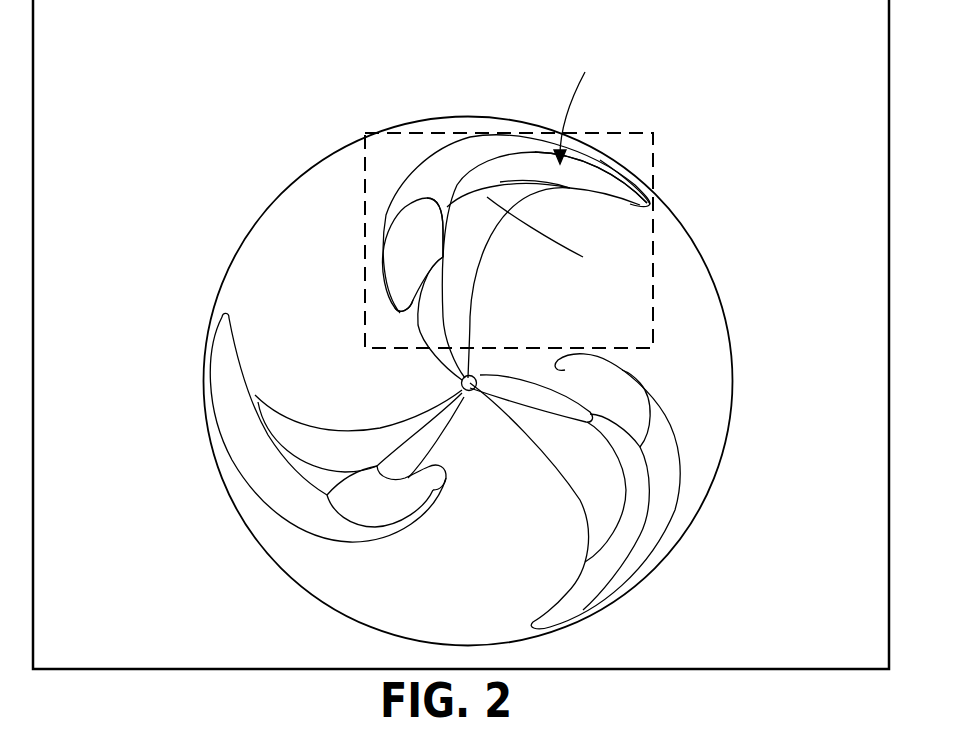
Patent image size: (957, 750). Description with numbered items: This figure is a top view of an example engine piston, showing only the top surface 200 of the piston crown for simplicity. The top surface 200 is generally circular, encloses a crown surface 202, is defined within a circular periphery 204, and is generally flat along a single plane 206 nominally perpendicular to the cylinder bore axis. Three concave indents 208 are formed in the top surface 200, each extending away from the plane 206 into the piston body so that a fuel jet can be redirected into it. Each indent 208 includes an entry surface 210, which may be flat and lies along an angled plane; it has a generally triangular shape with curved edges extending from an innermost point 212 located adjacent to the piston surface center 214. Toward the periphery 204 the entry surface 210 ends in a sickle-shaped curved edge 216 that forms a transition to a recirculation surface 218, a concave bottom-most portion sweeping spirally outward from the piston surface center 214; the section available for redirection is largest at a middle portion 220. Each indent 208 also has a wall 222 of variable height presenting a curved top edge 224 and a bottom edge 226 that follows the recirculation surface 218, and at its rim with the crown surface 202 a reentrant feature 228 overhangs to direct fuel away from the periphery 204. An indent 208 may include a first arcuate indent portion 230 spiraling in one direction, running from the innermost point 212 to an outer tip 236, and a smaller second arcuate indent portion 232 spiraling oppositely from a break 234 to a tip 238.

The top surface 200 is at (668, 152).
The crown surface 202 is at (675, 240).
The circular periphery 204 is at (720, 288).
The plane 206 is at (823, 572).
The indent 208 is at (610, 127).
The entry surface 210 is at (470, 315).
The innermost point 212 is at (463, 360).
The piston surface center 214 is at (461, 382).
The curved edge 216 is at (561, 239).
The recirculation surface 218 is at (570, 186).
The middle portion 220 is at (448, 188).
The wall 222 is at (498, 175).
The top edge 224 is at (513, 177).
The bottom edge 226 is at (532, 182).
The reentrant feature 228 is at (407, 192).
The first arcuate indent portion 230 is at (477, 217).
The second arcuate indent portion 232 is at (403, 260).
The break 234 is at (403, 220).
The outer tip 236 is at (660, 205).
The tip 238 is at (400, 307).